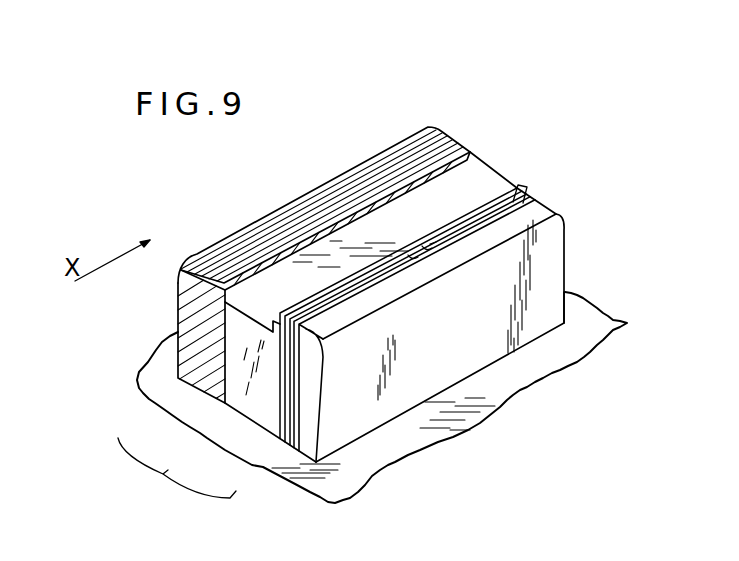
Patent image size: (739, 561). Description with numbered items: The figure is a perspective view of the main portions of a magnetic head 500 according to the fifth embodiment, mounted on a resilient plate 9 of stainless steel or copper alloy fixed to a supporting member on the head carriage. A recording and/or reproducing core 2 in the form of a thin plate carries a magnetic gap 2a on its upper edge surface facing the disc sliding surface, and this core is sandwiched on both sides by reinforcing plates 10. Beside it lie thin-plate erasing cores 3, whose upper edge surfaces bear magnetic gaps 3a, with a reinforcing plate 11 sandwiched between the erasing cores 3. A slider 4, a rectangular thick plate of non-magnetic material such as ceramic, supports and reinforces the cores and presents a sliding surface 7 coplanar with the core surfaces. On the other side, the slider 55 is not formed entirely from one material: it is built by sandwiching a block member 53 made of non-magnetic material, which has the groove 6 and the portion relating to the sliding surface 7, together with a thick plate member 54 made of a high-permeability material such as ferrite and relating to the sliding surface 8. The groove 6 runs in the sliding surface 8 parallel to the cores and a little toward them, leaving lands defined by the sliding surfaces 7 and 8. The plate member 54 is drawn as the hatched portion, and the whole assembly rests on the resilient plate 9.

The recording and/or reproducing core 2 is at (532, 195).
The magnetic gap 2a is at (432, 242).
The erasing cores 3 is at (393, 280).
The magnetic gaps 3a is at (413, 255).
The slider 4 is at (548, 246).
The groove 6 is at (477, 181).
The sliding surface 7 is at (326, 332).
The sliding surface 8 is at (283, 232).
The resilient plate 9 is at (500, 388).
The reinforcing plates 10 is at (518, 186).
The reinforcing plate 11 is at (348, 300).
The block member 53 is at (255, 405).
The thick plate member 54 is at (200, 373).
The slider 55 is at (177, 472).
The magnetic head 500 is at (567, 274).